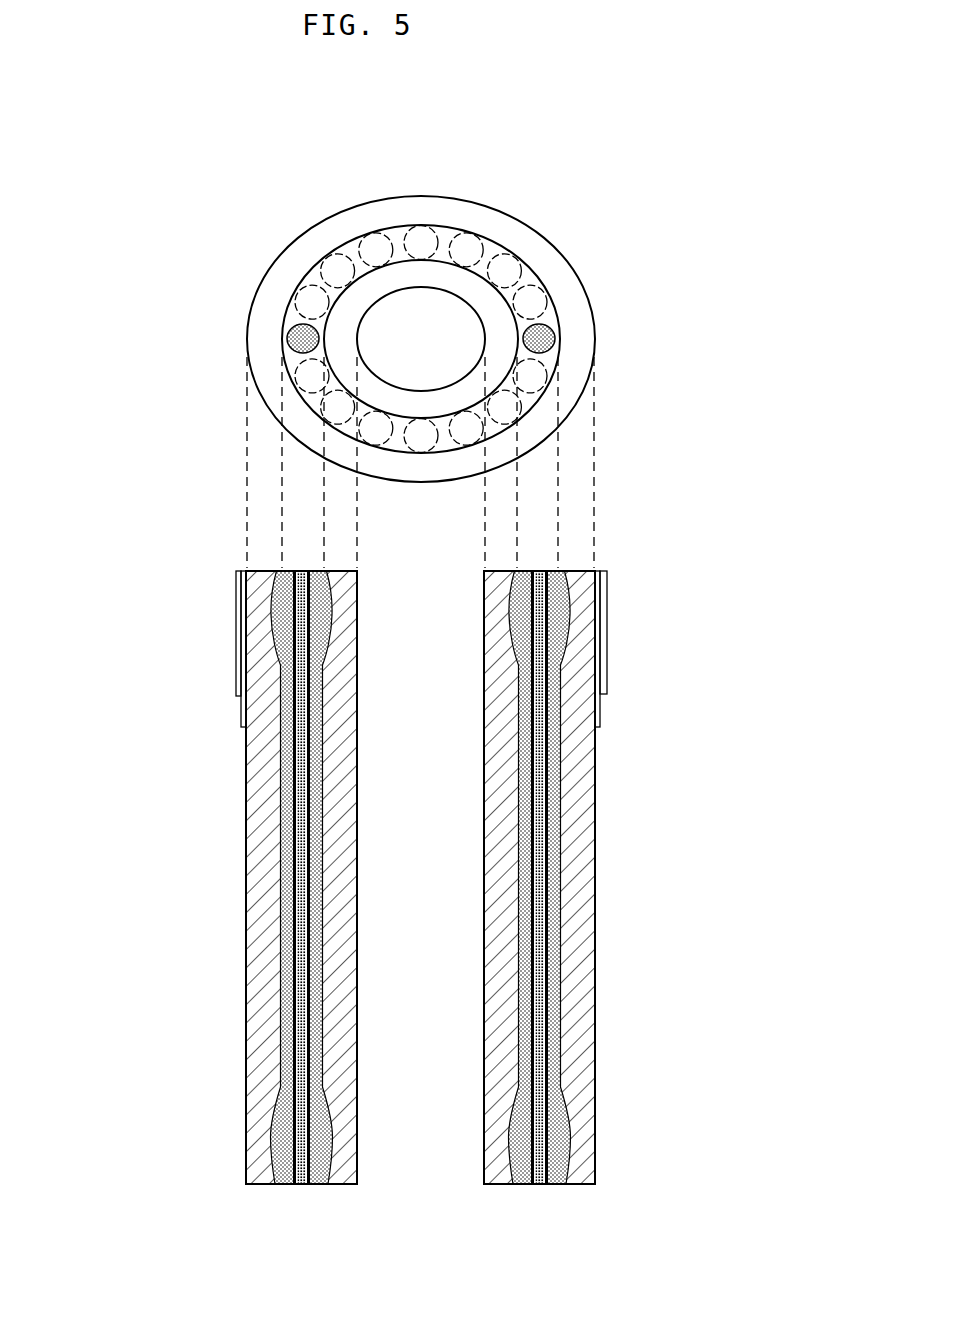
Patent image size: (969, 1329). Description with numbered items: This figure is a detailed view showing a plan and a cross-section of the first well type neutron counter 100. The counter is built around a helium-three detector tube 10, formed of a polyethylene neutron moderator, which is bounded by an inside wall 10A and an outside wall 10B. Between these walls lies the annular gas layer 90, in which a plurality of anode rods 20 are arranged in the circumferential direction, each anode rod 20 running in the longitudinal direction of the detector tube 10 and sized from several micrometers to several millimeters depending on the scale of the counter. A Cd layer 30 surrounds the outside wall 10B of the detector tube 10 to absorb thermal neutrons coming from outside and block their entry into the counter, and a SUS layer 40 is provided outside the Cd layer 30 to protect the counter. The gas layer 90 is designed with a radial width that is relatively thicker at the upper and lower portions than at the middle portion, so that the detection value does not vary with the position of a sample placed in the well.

The first well type neutron counter 100 is at (155, 178).
The He-3 detector tube 10 is at (575, 877).
The inside wall 10A is at (500, 1079).
The outside wall 10B is at (577, 977).
The anode rod 20 is at (538, 877).
The Cd layer 30 is at (607, 571).
The SUS layer 40 is at (598, 703).
The annular gas layer 90 is at (560, 783).